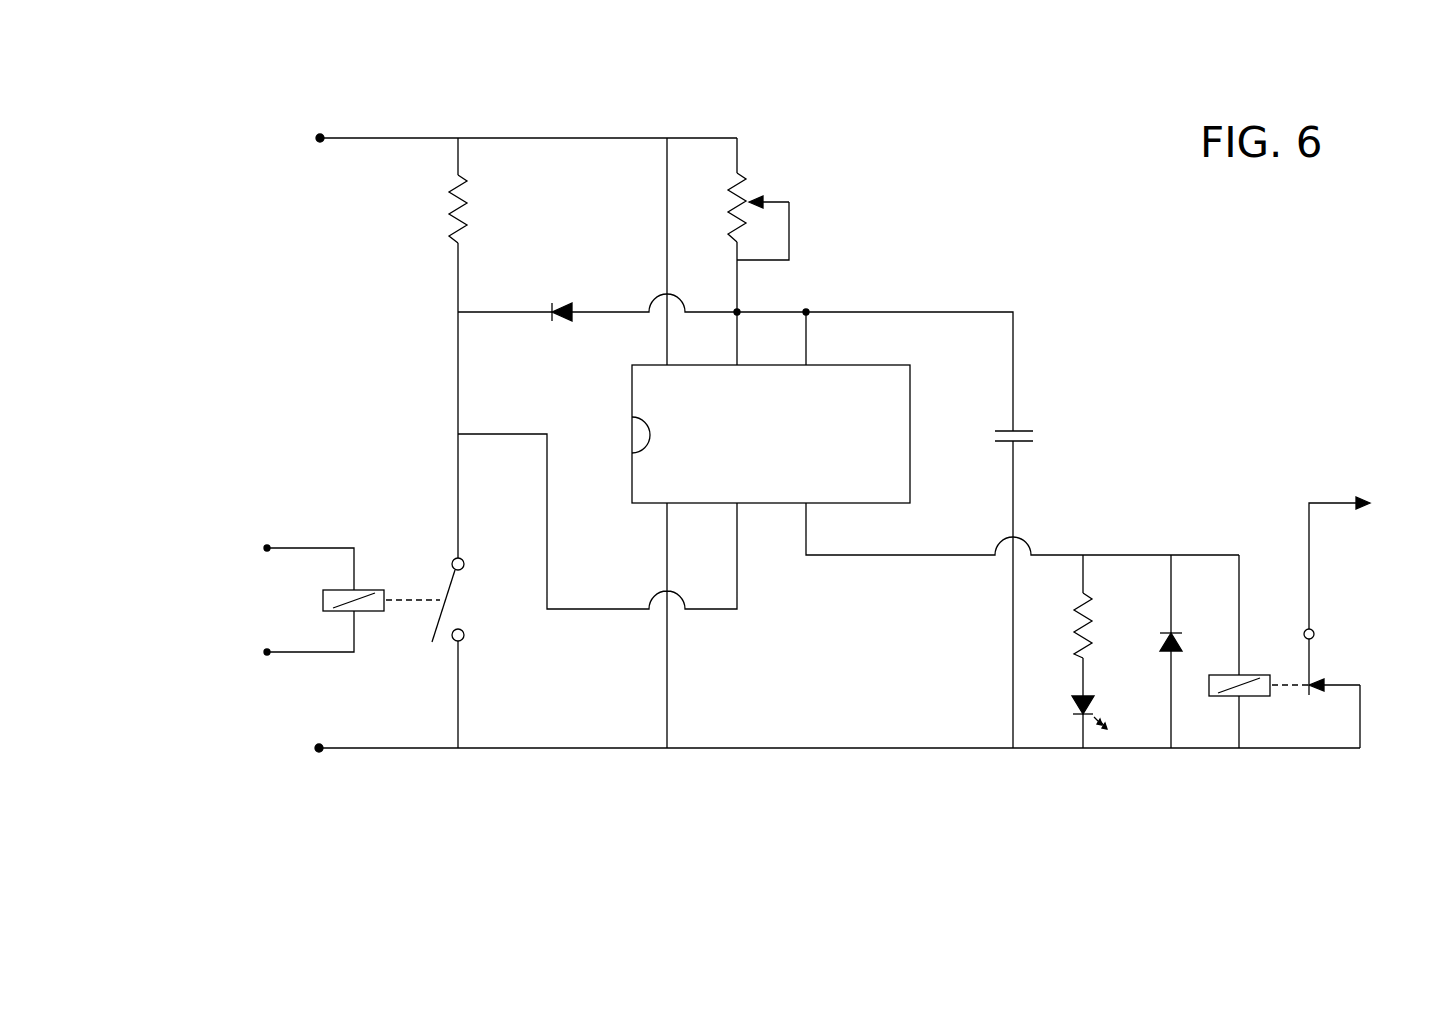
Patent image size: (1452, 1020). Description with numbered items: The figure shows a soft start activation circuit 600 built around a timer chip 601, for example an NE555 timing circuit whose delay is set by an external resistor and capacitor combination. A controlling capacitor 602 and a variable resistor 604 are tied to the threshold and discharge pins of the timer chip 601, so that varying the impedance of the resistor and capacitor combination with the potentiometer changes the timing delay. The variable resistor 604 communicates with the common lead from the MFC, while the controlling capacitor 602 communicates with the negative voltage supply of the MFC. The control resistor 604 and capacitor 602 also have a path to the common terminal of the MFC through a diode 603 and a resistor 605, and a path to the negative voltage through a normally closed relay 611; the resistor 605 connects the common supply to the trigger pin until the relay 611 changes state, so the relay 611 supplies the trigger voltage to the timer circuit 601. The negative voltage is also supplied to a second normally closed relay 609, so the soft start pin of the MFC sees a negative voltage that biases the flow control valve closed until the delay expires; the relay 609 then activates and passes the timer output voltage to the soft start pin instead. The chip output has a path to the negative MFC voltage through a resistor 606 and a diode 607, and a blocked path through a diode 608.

The soft start activation circuit 600 is at (993, 251).
The timer chip 601 is at (910, 378).
The controlling capacitor 602 is at (1034, 438).
The diode 603 is at (560, 306).
The variable resistor 604 is at (742, 188).
The resistor 605 is at (455, 212).
The resistor 606 is at (1086, 632).
The diode 607 is at (1072, 708).
The diode 608 is at (1184, 640).
The normally closed relay 609 is at (1250, 676).
The normally closed relay 611 is at (371, 590).